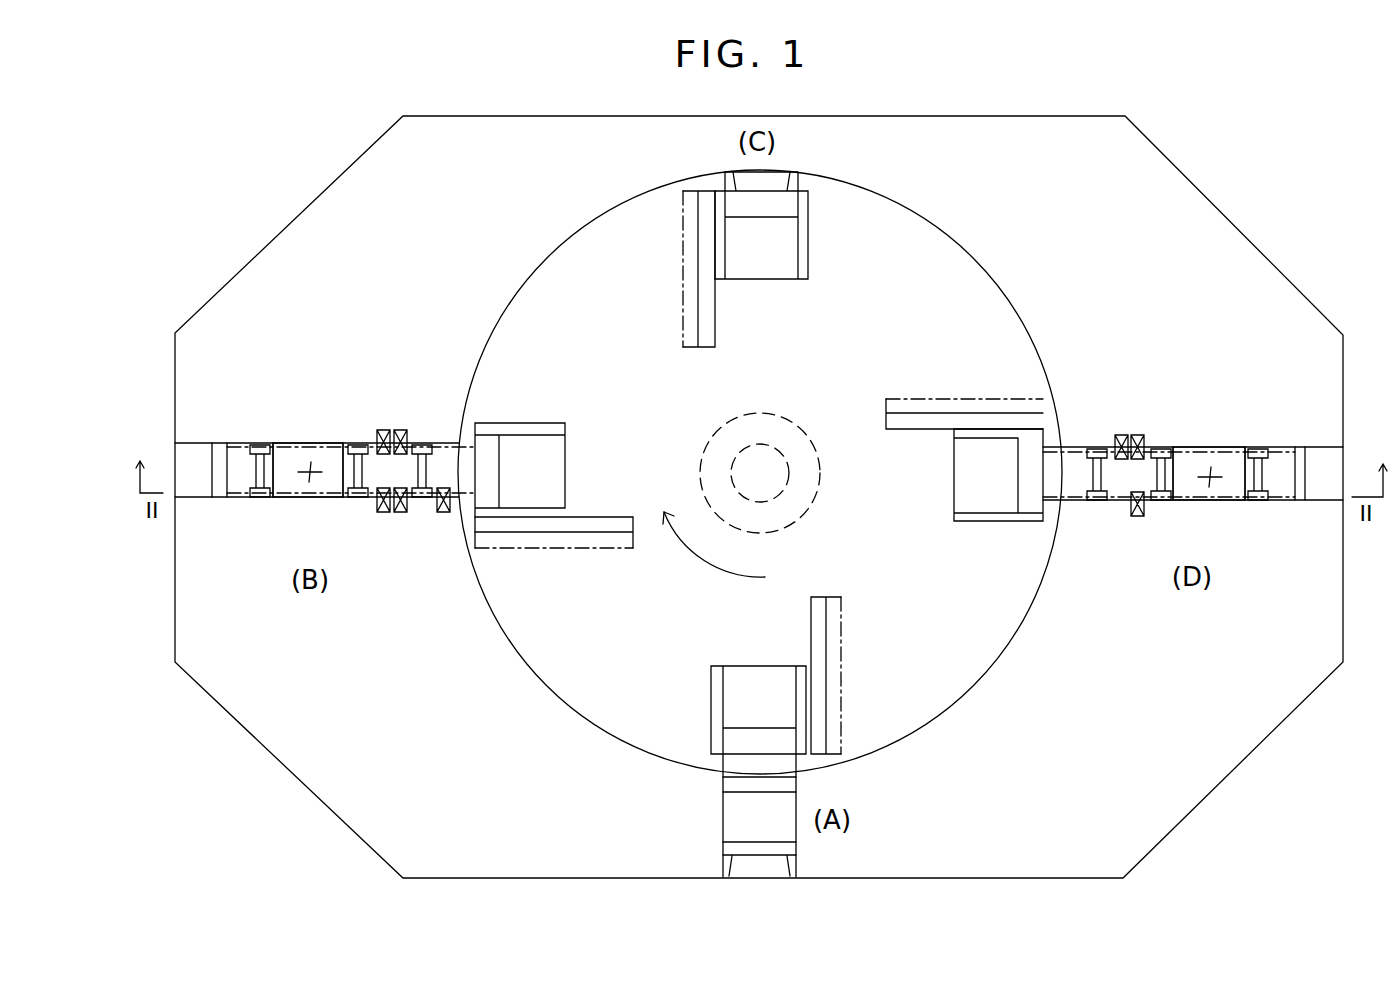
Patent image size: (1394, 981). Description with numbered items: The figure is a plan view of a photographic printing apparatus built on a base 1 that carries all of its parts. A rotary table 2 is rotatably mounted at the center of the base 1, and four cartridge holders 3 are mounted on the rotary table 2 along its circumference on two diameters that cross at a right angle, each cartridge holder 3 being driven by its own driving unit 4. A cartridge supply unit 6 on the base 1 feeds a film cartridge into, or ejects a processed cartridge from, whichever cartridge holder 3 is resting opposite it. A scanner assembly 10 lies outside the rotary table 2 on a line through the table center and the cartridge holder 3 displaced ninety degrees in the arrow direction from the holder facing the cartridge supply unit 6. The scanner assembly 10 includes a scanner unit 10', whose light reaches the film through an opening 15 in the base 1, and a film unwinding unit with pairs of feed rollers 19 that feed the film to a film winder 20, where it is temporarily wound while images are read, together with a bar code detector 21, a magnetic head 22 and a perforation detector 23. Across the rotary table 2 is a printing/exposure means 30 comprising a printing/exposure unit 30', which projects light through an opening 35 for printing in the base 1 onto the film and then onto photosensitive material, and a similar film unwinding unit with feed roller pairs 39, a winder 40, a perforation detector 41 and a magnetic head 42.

The base 1 is at (372, 180).
The rotary table 2 is at (530, 292).
The cartridge holder 3 is at (530, 424).
The driving unit 4 is at (576, 548).
The cartridge supply unit 6 is at (712, 821).
The scanner assembly 10 is at (325, 398).
The scanner unit 10' is at (299, 433).
The opening 15 is at (310, 477).
The feed rollers 19 is at (260, 497).
The film winder 20 is at (197, 443).
The bar code detector 21 is at (383, 488).
The magnetic head 22 is at (399, 488).
The perforation detector 23 is at (443, 512).
The printing/exposure means 30 is at (1193, 399).
The printing/exposure unit 30' is at (1209, 436).
The opening for printing 35 is at (1210, 480).
The feed roller pairs 39 is at (1160, 500).
The winder 40 is at (1320, 447).
The perforation detector 41 is at (1120, 435).
The magnetic head 42 is at (1140, 492).